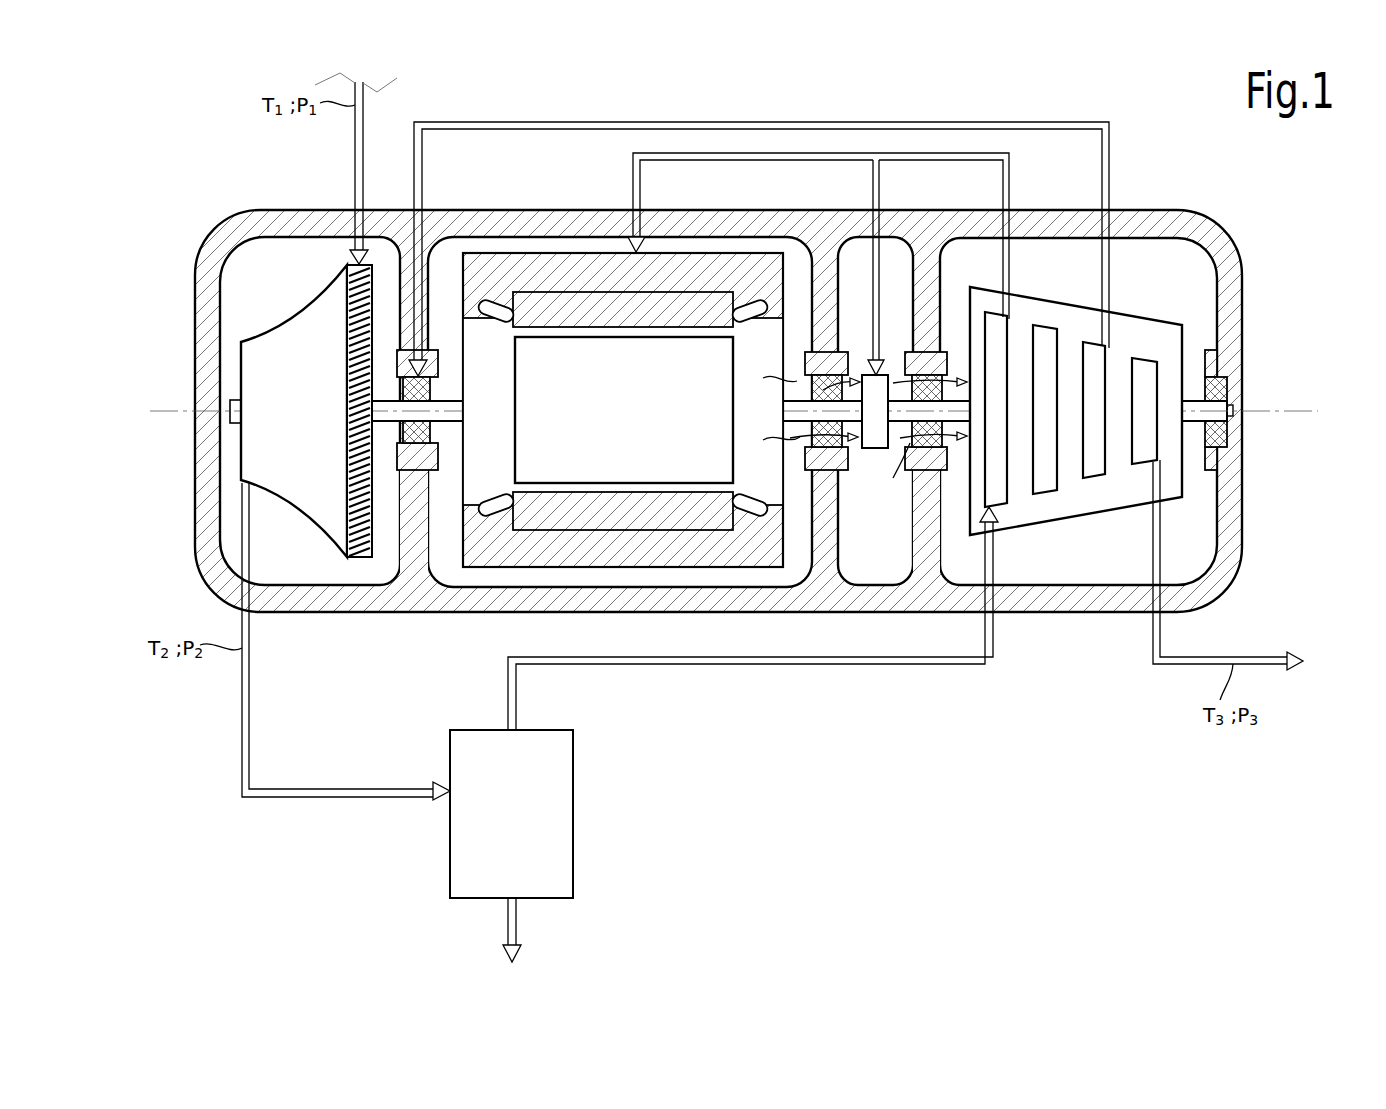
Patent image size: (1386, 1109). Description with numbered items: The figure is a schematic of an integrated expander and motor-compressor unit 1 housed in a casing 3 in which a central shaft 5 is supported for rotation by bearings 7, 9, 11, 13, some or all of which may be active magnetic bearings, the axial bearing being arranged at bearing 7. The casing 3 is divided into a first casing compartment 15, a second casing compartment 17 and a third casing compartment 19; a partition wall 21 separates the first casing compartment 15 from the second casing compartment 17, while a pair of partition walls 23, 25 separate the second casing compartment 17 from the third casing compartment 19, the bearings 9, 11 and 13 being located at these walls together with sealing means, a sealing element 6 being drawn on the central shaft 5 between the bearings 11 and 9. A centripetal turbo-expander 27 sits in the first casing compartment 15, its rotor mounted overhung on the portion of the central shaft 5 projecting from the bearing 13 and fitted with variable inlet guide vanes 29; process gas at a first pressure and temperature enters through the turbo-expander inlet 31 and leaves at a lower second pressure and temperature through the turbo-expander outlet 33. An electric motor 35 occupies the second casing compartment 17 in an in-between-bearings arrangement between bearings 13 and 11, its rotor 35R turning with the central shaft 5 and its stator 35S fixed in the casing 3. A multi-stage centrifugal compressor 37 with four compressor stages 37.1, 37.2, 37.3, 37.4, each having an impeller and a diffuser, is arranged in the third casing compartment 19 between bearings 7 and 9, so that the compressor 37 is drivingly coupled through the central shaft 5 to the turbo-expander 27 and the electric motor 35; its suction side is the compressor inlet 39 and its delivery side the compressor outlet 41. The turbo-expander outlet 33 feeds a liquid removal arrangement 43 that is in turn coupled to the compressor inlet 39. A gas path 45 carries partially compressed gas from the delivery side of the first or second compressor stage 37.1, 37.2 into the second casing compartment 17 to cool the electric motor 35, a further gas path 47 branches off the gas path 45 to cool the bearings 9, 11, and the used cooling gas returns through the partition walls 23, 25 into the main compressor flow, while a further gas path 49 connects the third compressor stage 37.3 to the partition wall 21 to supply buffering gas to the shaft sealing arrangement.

The integrated expander and motor-compressor unit 1 is at (727, 413).
The casing 3 is at (1238, 572).
The central shaft 5 is at (482, 417).
The seal 6 is at (870, 441).
The bearing 7 is at (1222, 387).
The bearing 9 is at (923, 438).
The bearing 11 is at (812, 350).
The bearing 13 is at (427, 390).
The first casing compartment 15 is at (258, 284).
The second casing compartment 17 is at (450, 557).
The third casing compartment 19 is at (1030, 572).
The partition wall 21 is at (420, 537).
The partition wall 23 is at (835, 540).
The partition wall 25 is at (923, 540).
The turbo-expander 27 is at (278, 436).
The variable inlet guide vanes 29 is at (362, 553).
The turbo-expander inlet 31 is at (355, 175).
The turbo-expander outlet 33 is at (249, 707).
The electric motor 35 is at (623, 403).
The rotor 35R is at (636, 392).
The stator 35S is at (606, 550).
The compressor 37 is at (1086, 414).
The first compressor stage 37.1 is at (993, 333).
The second compressor stage 37.2 is at (1045, 340).
The third compressor stage 37.3 is at (1097, 357).
The fourth compressor stage 37.4 is at (1145, 367).
The compressor inlet 39 is at (678, 663).
The compressor outlet 41 is at (1175, 662).
The liquid removal arrangement 43 is at (573, 838).
The gas path 45 is at (633, 172).
The further gas path 47 is at (873, 190).
The further gas path 49 is at (555, 122).